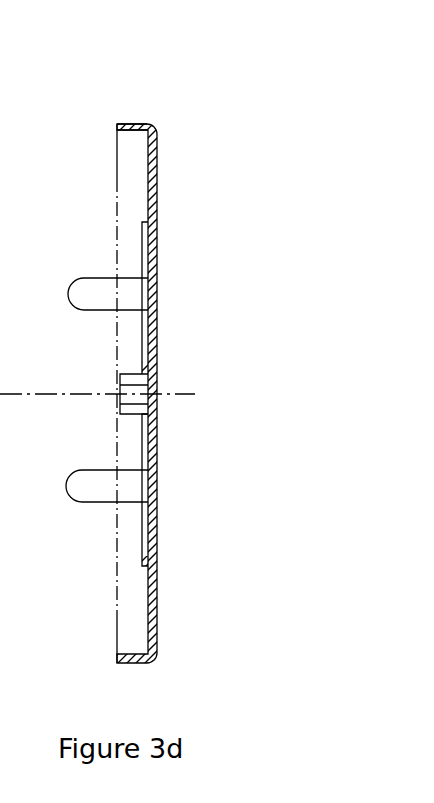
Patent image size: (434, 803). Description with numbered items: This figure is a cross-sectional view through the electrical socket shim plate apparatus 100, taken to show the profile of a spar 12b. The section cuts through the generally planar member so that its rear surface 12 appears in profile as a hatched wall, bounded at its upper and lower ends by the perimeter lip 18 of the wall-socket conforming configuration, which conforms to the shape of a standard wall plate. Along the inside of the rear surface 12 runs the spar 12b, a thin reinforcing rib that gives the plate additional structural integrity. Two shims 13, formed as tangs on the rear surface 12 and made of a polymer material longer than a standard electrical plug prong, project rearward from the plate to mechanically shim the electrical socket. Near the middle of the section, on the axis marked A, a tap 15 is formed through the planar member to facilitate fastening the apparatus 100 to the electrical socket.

The electrical socket shim plate apparatus 100 is at (154, 90).
The rear surface 12 is at (148, 602).
The spar 12b is at (142, 233).
The shim 13 is at (85, 276).
The tap 15 is at (118, 397).
The perimeter lip 18 is at (118, 126).